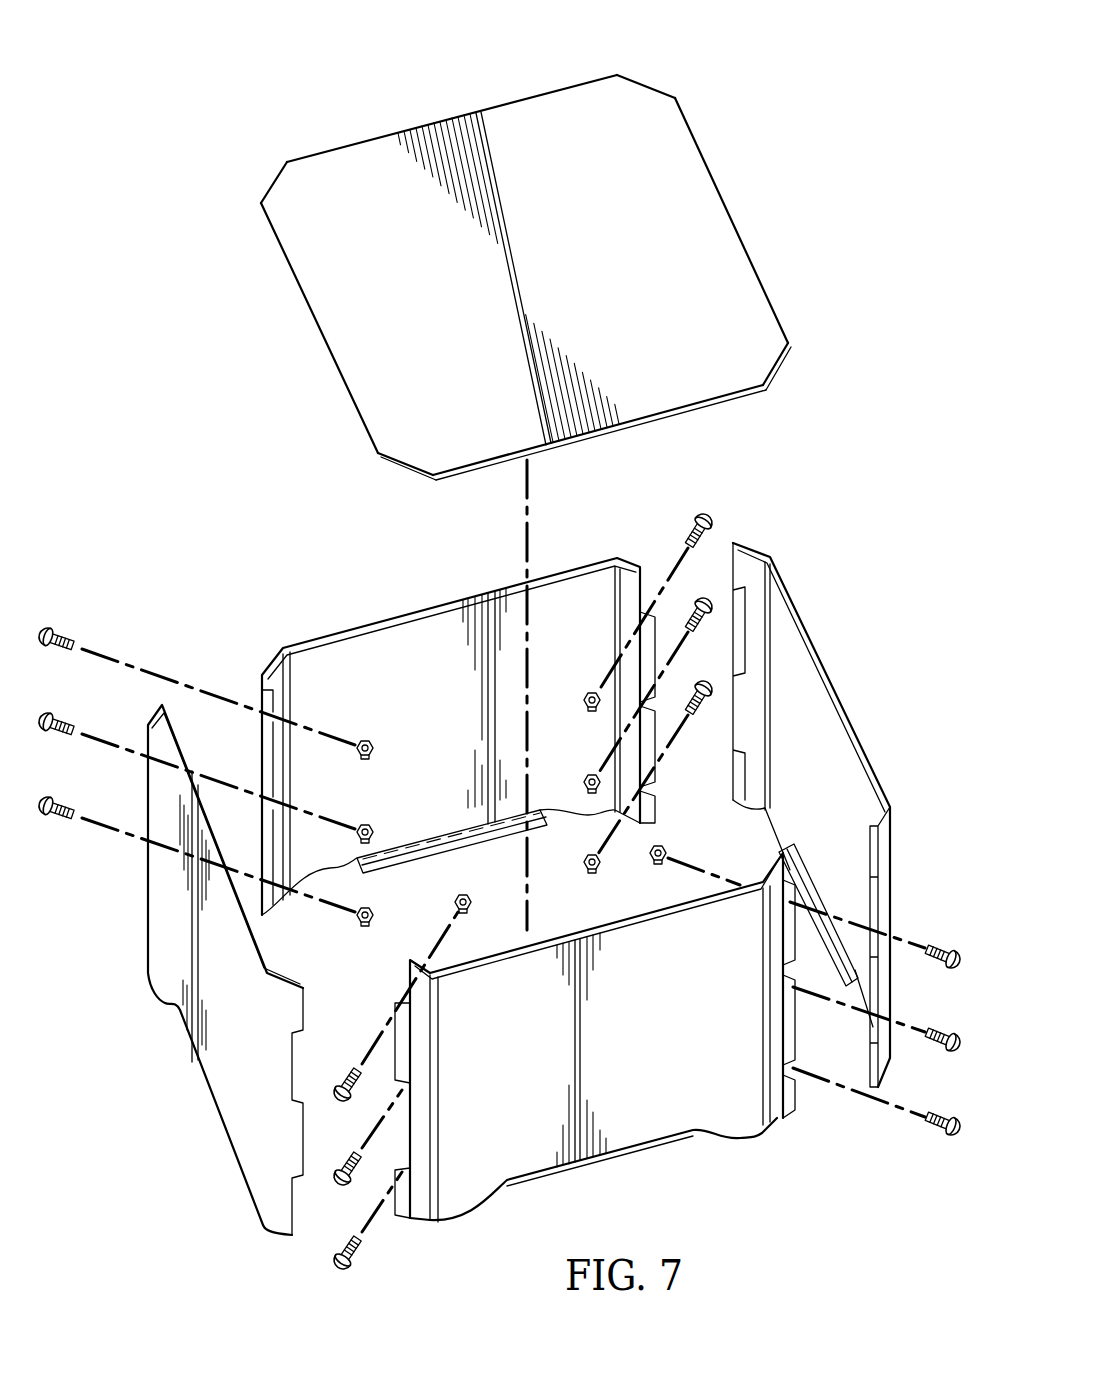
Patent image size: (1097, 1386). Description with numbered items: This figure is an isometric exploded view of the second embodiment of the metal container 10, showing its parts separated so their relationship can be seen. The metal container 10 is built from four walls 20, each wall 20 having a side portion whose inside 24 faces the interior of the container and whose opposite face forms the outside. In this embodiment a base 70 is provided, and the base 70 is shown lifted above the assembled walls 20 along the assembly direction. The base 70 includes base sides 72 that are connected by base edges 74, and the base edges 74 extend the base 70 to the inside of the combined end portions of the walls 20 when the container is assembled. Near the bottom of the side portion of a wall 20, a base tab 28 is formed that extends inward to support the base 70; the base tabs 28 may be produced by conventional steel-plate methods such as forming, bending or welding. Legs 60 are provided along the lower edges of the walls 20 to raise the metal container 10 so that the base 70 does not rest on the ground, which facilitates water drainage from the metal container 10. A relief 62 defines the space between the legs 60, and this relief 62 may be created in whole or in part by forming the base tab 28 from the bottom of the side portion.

The metal container 10 is at (132, 94).
The wall 20 is at (342, 622).
The inside 24 is at (451, 745).
The base tab 28 is at (402, 868).
The leg 60 is at (257, 1208).
The relief 62 is at (670, 1156).
The base 70 is at (368, 130).
The base side 72 is at (498, 104).
The base edge 74 is at (272, 176).